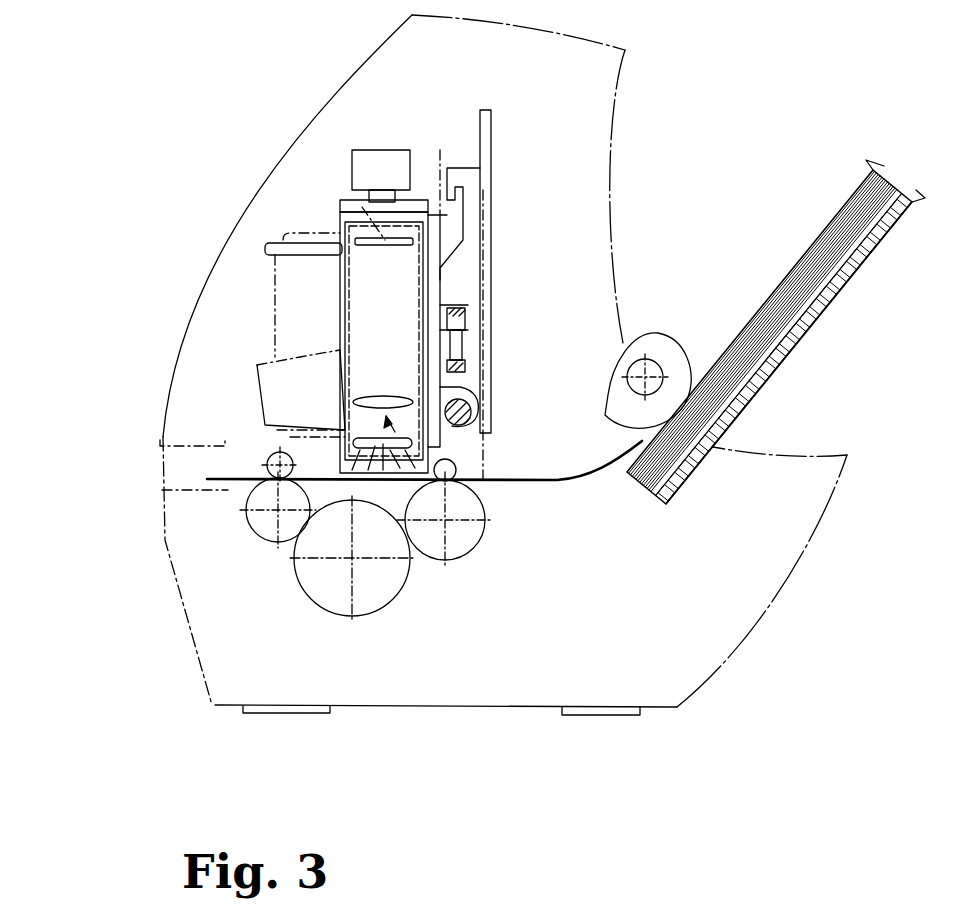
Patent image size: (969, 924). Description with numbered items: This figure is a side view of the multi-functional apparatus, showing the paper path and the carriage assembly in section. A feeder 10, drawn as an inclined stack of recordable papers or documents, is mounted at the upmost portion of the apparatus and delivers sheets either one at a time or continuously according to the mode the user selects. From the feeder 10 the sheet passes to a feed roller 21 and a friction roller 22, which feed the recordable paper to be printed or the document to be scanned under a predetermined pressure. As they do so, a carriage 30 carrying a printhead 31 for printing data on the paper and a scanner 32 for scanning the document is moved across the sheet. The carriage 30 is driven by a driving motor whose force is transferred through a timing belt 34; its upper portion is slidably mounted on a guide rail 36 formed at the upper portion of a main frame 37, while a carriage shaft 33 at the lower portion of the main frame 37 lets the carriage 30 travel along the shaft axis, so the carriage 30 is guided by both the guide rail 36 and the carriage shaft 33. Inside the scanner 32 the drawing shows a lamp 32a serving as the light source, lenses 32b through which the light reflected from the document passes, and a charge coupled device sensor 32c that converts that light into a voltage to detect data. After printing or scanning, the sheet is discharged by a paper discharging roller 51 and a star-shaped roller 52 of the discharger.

The feeder 10 is at (770, 278).
The feed roller 21 is at (465, 555).
The friction roller 22 is at (490, 482).
The carriage 30 is at (250, 390).
The printhead 31 is at (273, 237).
The scanner 32 is at (363, 148).
The head housing upper part 32a is at (362, 207).
The lens 32b is at (380, 396).
The light source / lower element 32c is at (352, 421).
The carriage shaft 33 is at (478, 398).
The timing belt 34 is at (450, 303).
The guide rail 36 is at (440, 165).
The main frame 37 is at (492, 185).
The paper discharging roller 51 is at (258, 525).
The star-shaped roller 52 is at (265, 472).